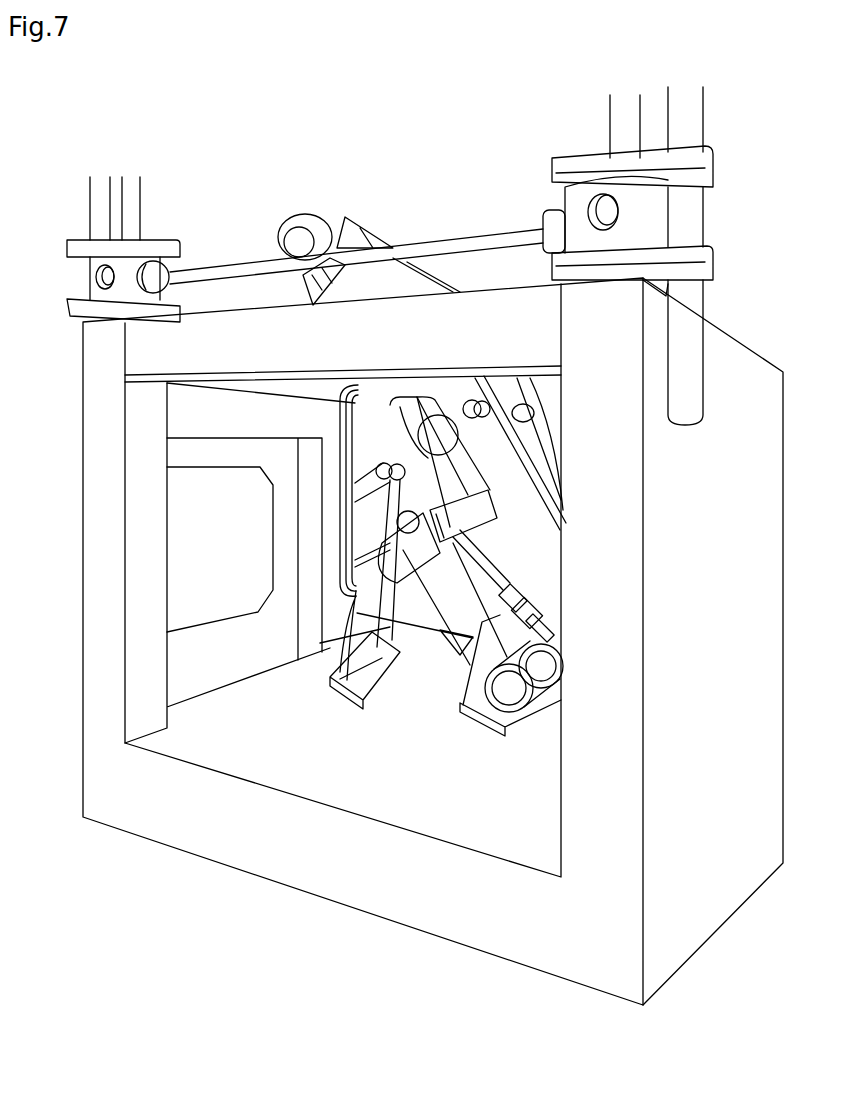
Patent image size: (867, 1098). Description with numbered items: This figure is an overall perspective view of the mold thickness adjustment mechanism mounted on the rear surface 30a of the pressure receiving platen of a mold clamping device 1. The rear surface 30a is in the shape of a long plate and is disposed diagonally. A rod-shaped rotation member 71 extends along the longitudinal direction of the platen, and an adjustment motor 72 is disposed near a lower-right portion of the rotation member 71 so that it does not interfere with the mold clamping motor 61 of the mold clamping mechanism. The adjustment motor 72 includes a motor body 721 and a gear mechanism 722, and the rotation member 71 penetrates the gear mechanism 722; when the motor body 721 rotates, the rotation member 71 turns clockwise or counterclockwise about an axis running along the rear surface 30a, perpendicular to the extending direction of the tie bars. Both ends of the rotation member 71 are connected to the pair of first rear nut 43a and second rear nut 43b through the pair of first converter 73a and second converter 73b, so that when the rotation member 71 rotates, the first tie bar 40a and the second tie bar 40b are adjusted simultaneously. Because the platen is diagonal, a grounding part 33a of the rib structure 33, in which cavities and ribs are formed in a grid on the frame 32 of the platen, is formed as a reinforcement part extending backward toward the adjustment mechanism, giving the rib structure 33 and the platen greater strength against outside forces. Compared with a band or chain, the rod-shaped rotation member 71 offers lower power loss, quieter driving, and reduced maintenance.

The robot / device 1 is at (204, 157).
The rear surface 30a is at (423, 263).
The first tie bar 40a is at (277, 231).
The first rear nut 43a is at (333, 223).
The first converter 73a is at (397, 287).
The frame 32 is at (365, 508).
The rib structure 33 is at (385, 578).
The grounding part 33a is at (343, 690).
The mold clamping motor 61 is at (460, 440).
The adjustment motor 72 is at (506, 627).
The motor body 721 is at (420, 585).
The gear mechanism 722 is at (473, 510).
The rotation member 71 is at (500, 562).
The second converter 73b is at (522, 590).
The second rear nut 43b is at (545, 650).
The second tie bar 40b is at (543, 677).